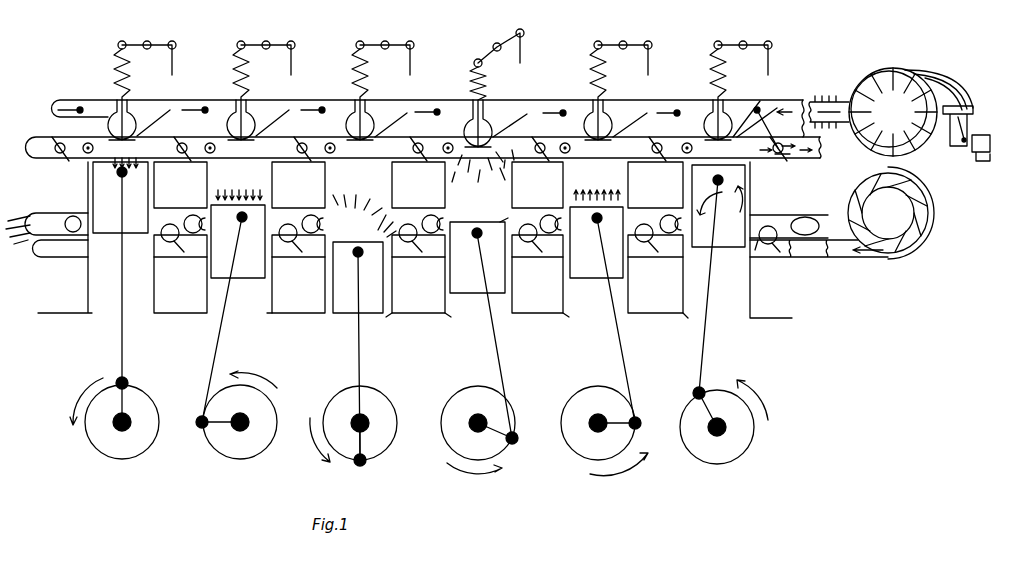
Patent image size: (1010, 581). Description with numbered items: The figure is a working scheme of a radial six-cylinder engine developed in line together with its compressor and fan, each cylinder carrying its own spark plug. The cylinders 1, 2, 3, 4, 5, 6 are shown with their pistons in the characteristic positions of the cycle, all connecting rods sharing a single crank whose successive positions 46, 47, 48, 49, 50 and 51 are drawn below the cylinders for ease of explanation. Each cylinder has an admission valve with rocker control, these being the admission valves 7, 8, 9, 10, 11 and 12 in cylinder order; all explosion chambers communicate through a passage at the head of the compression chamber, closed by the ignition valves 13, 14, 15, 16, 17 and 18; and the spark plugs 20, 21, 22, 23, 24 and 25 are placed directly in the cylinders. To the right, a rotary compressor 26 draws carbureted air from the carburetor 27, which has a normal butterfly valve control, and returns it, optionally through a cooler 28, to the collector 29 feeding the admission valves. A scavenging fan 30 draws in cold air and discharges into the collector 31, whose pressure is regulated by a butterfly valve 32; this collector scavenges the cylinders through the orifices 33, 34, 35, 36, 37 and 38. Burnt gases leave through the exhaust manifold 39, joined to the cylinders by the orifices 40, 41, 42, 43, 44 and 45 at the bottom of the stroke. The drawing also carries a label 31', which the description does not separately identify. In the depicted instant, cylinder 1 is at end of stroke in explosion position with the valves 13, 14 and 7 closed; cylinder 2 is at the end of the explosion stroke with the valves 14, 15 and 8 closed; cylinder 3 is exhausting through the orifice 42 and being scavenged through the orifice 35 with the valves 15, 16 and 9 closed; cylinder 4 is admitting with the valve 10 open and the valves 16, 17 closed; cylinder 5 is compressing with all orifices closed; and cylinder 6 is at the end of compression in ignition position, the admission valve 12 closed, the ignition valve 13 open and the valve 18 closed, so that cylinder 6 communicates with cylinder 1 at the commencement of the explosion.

The cylinder 1 is at (122, 240).
The cylinder 2 is at (290, 240).
The cylinder 3 is at (410, 249).
The cylinder 4 is at (504, 246).
The cylinder 5 is at (623, 243).
The cylinder 6 is at (737, 249).
The admission valve 7 is at (142, 90).
The admission valve 8 is at (261, 90).
The admission valve 9 is at (380, 90).
The admission valve 10 is at (488, 105).
The admission valve 11 is at (618, 90).
The admission valve 12 is at (738, 90).
The ignition valve of the communication passage 13 is at (78, 113).
The ignition valve of the communication passage 14 is at (203, 113).
The ignition valve of the communication passage 15 is at (320, 113).
The ignition valve of the communication passage 16 is at (435, 115).
The ignition valve of the communication passage 17 is at (561, 116).
The ignition valve of the communication passage 18 is at (675, 116).
The spark plug 20 is at (110, 154).
The spark plug 21 is at (220, 150).
The spark plug 22 is at (340, 150).
The spark plug 23 is at (459, 156).
The spark plug 24 is at (576, 155).
The spark plug 25 is at (697, 155).
The rotary compressor 26 is at (911, 112).
The carburetor 27 is at (968, 133).
The cooler 28 is at (822, 97).
The collector for the admission valves 29 is at (777, 98).
The scavenging fan 30 is at (891, 213).
The collector 31 is at (821, 227).
The return duct 31' is at (61, 257).
The butterfly valve 32 is at (805, 250).
The scavenging orifice 33 is at (183, 233).
The scavenging orifice 34 is at (301, 233).
The scavenging orifice 35 is at (421, 233).
The scavenging orifice 36 is at (540, 233).
The scavenging orifice 37 is at (658, 233).
The scavenging orifice 38 is at (767, 239).
The exhaust manifold 39 is at (417, 219).
The exhaust orifice 40 is at (120, 272).
The exhaust orifice 41 is at (233, 306).
The exhaust orifice 42 is at (361, 327).
The exhaust orifice 43 is at (450, 222).
The exhaust orifice 44 is at (562, 228).
The exhaust orifice 45 is at (718, 279).
The crank position 46 is at (114, 415).
The crank position 47 is at (229, 415).
The crank position 48 is at (353, 426).
The crank position 49 is at (490, 430).
The crank position 50 is at (613, 431).
The crank position 51 is at (724, 417).